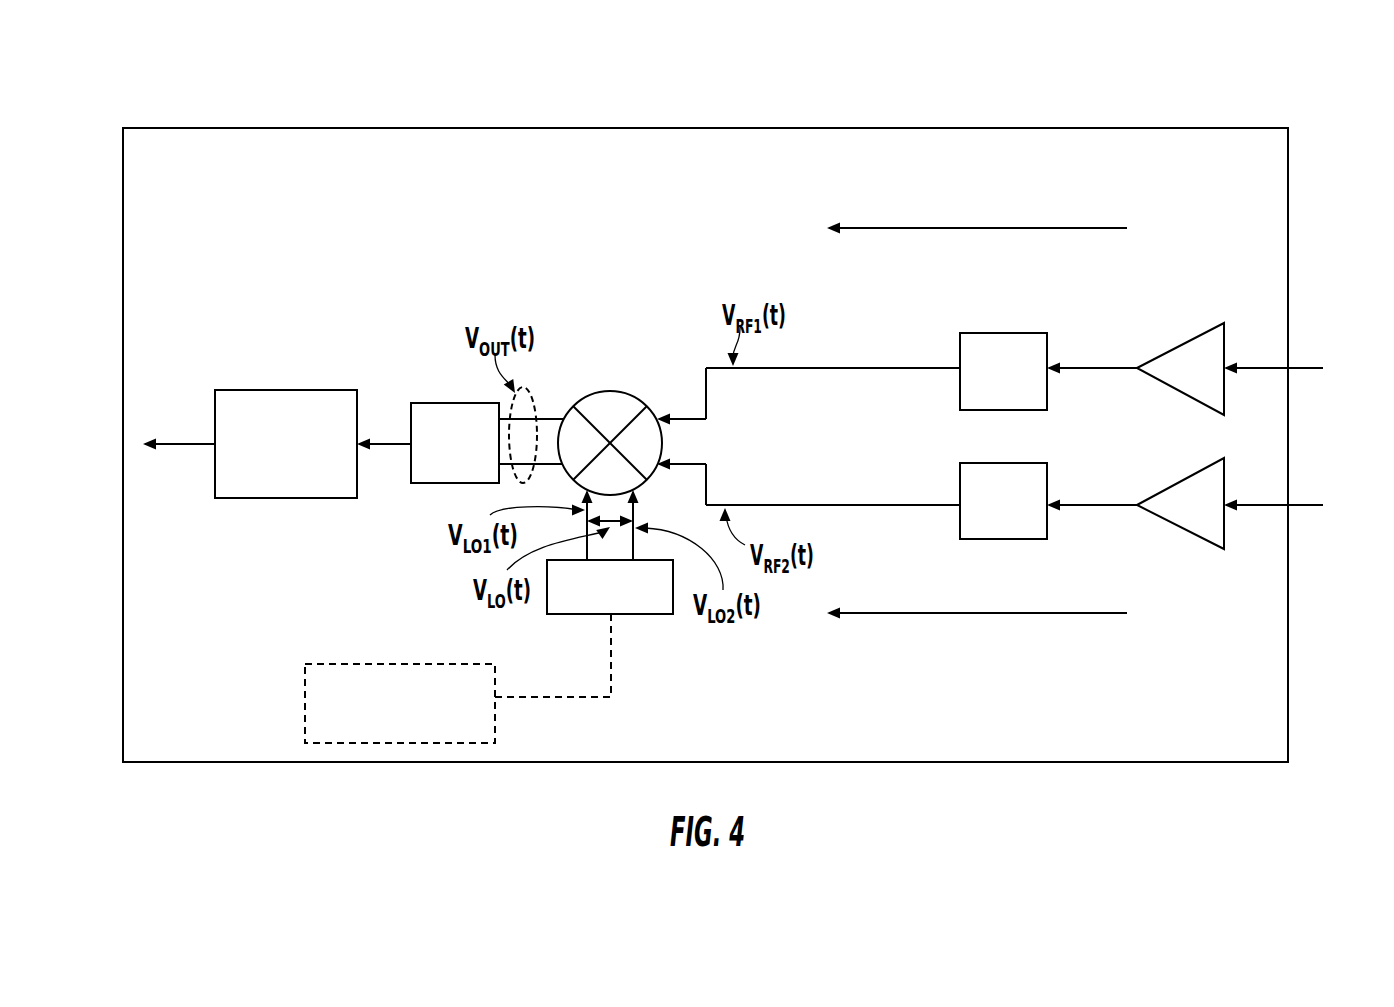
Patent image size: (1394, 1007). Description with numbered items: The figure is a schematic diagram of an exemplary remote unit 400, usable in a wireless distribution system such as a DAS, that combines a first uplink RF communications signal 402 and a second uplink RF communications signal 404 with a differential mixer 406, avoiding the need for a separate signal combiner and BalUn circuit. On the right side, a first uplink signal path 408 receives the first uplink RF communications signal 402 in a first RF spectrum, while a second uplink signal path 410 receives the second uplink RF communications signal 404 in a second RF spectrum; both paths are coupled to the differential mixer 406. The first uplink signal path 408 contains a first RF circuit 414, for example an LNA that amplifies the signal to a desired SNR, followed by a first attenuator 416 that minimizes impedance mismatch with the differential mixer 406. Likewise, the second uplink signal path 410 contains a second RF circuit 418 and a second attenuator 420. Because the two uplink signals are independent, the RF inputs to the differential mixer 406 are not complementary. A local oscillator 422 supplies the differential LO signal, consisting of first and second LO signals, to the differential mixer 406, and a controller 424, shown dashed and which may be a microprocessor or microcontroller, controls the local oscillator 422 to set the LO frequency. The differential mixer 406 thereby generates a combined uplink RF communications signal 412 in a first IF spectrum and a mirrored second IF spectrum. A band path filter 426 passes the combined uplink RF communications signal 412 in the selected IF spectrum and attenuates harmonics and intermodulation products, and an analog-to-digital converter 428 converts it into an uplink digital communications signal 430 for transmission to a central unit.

The remote unit 400 is at (172, 128).
The first uplink RF communications signal 402 is at (845, 358).
The second uplink RF communications signal 404 is at (835, 496).
The differential mixer 406 is at (628, 390).
The first uplink signal path 408 is at (975, 228).
The second uplink signal path 410 is at (950, 613).
The combined uplink RF communications signal 412 is at (398, 436).
The first RF circuit 414 is at (1182, 340).
The first attenuator 416 is at (1010, 333).
The second RF circuit 418 is at (1195, 540).
The second attenuator 420 is at (1000, 539).
The local oscillator 422 is at (648, 615).
The controller 424 is at (367, 664).
The band path filter 426 is at (460, 403).
The ADC 428 is at (268, 390).
The uplink digital communications signal 430 is at (180, 455).